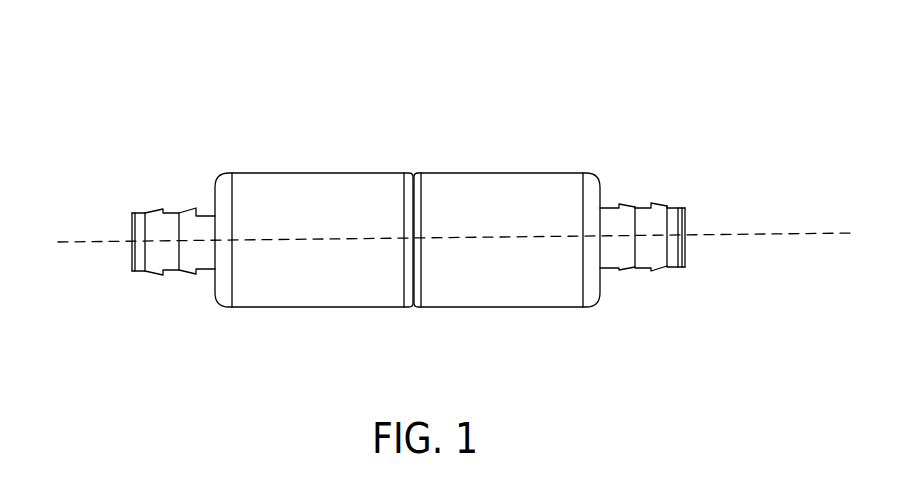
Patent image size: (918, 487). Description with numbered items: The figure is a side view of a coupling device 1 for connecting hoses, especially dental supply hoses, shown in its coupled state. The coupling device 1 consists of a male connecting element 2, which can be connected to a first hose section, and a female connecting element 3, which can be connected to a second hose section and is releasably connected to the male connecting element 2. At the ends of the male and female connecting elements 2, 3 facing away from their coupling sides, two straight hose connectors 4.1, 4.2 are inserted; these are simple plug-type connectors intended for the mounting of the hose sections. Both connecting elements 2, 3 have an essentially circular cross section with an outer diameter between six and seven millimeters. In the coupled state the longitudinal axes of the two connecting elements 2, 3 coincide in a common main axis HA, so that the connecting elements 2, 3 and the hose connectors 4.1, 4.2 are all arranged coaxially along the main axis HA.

The coupling device 1 is at (447, 168).
The male connecting element 2 is at (510, 187).
The female connecting element 3 is at (297, 185).
The hose connector 4.1 is at (643, 223).
The hose connector 4.2 is at (173, 220).
The main axis HA is at (455, 225).